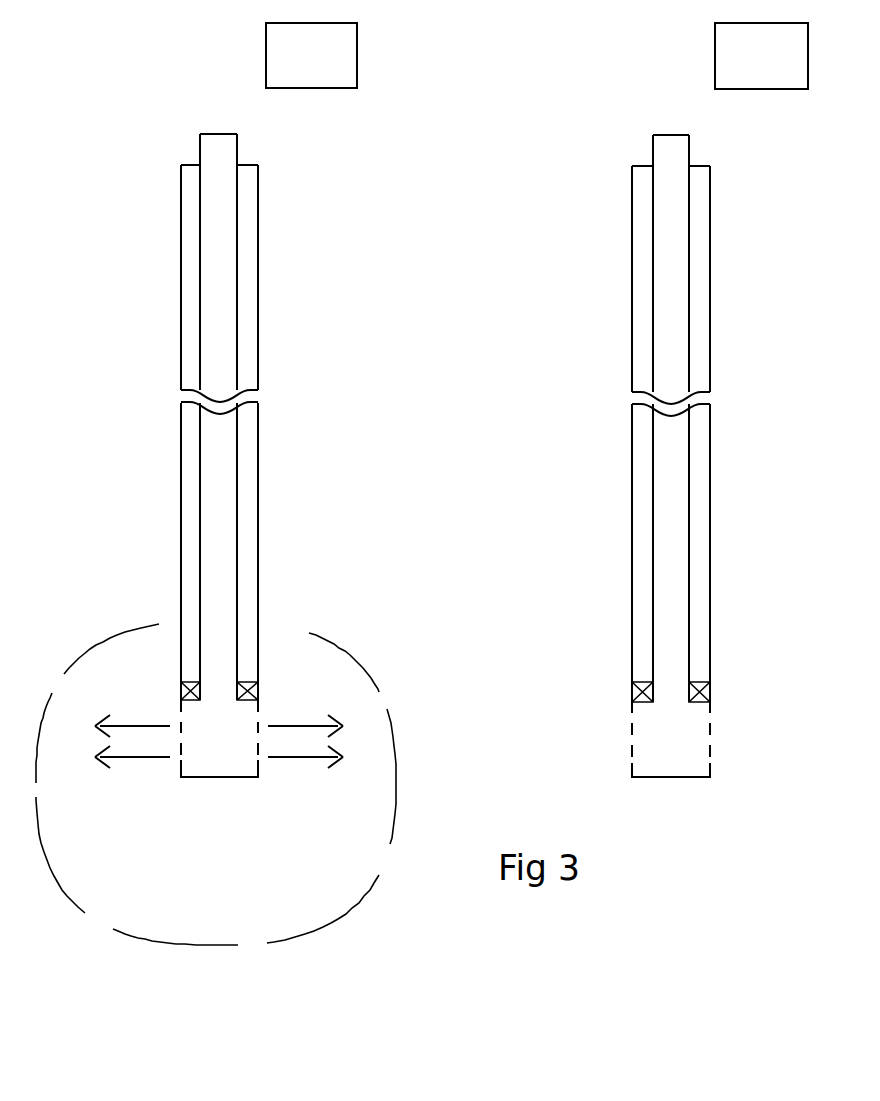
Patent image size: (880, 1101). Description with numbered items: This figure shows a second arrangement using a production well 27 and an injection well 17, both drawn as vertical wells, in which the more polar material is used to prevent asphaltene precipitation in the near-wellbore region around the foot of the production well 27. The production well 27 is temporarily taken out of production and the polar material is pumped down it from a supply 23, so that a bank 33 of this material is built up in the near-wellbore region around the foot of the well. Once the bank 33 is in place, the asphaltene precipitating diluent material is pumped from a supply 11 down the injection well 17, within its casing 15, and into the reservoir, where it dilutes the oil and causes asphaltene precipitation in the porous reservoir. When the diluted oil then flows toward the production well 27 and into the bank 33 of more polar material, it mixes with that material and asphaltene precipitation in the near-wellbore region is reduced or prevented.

The supply 11 is at (672, 135).
The casing 15 is at (688, 520).
The injection well 17 is at (627, 435).
The supply 23 is at (266, 65).
The production well 27 is at (267, 444).
The bank 33 is at (216, 784).